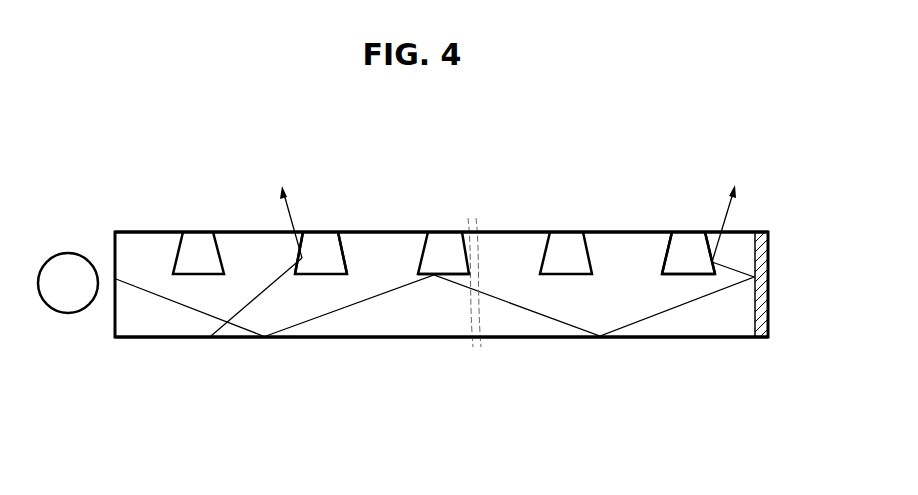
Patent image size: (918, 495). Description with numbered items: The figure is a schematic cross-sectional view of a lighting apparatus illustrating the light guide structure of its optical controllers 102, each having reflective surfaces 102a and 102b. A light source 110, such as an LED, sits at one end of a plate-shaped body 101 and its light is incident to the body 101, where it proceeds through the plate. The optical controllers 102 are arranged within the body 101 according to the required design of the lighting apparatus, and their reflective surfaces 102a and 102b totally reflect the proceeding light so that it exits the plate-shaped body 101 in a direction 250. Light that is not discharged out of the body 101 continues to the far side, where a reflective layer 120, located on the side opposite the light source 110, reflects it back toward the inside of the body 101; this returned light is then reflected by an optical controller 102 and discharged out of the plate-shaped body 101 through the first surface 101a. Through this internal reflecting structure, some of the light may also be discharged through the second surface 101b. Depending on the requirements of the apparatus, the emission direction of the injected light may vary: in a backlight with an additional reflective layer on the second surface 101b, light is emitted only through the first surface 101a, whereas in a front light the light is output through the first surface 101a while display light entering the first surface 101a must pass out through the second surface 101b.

The plate-shaped body 101 is at (490, 376).
The first surface 101a is at (393, 230).
The second surface 101b is at (365, 337).
The optical controller 102 is at (563, 230).
The reflective surface 102a is at (307, 237).
The reflective surface 102b is at (447, 273).
The light source 110 is at (72, 250).
The reflective layer 120 is at (770, 310).
The direction 250 is at (280, 207).